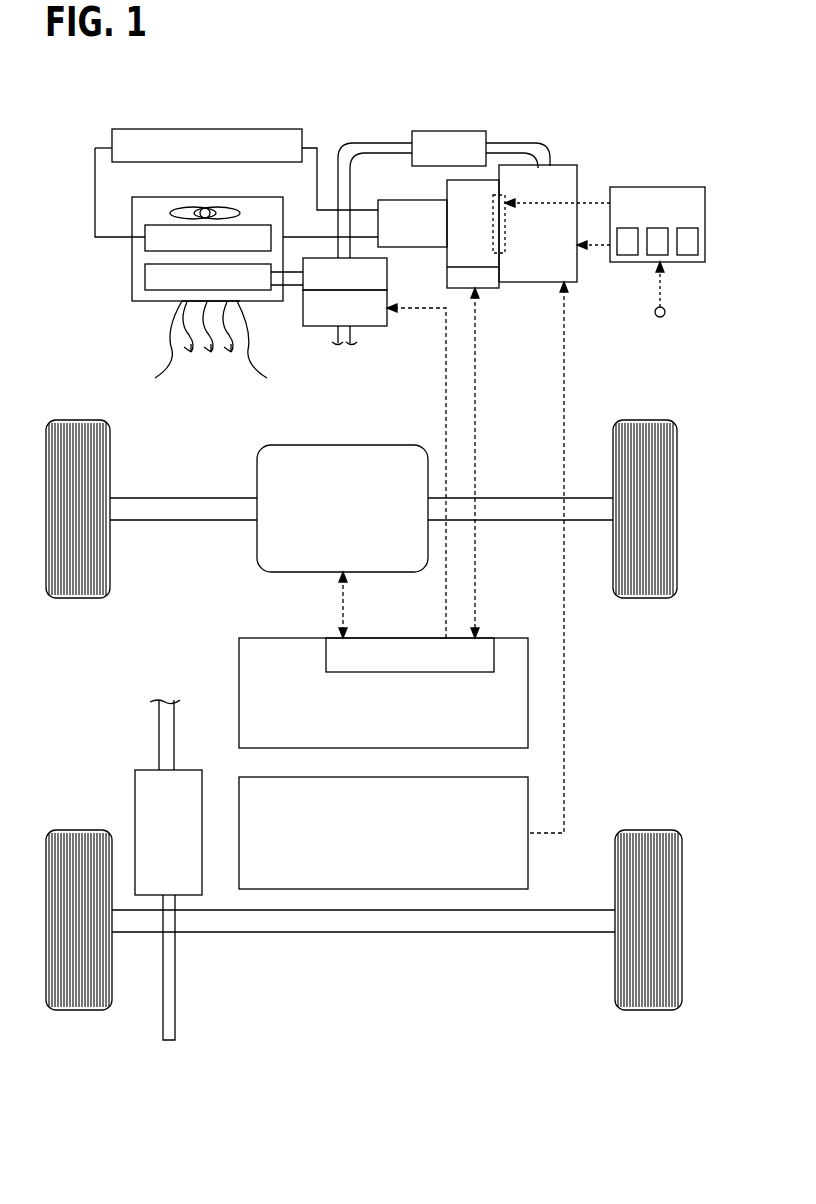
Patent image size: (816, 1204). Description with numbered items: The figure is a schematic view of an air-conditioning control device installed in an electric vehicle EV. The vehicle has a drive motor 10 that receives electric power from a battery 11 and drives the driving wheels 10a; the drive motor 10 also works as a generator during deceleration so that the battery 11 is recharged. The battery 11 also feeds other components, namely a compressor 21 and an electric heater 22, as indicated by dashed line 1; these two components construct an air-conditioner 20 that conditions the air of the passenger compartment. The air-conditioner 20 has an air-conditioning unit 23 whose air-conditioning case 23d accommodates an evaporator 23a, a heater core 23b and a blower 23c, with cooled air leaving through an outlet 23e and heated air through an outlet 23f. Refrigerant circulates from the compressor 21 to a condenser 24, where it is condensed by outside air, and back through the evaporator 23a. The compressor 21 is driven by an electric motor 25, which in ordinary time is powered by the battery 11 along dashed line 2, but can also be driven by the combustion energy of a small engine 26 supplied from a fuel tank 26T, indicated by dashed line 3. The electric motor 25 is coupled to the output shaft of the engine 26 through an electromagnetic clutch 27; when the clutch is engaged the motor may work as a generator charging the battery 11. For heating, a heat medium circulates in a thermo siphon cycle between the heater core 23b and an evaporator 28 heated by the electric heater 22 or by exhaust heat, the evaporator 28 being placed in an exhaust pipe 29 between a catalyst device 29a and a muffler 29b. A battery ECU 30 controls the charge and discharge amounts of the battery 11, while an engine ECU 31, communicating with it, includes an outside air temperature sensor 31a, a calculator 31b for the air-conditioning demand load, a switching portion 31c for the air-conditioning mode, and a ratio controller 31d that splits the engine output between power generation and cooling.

The dashed line 1 is at (446, 390).
The dashed line 2 is at (475, 390).
The dashed line 3 is at (564, 390).
The drive motor 10 is at (405, 445).
The driving wheels 10a is at (88, 420).
The battery 11 is at (253, 638).
The air-conditioner 20 is at (100, 130).
The compressor 21 is at (387, 200).
The electric heater 22 is at (372, 327).
The air-conditioning unit 23 is at (120, 311).
The evaporator 23a is at (145, 242).
The heater core 23b is at (145, 278).
The blower 23c is at (225, 207).
The air-conditioning case 23d is at (137, 302).
The outlet 23e is at (153, 352).
The outlet 23f is at (263, 352).
The condenser 24 is at (285, 129).
The electric motor 25 is at (482, 262).
The engine 26 is at (565, 165).
The fuel tank 26T is at (528, 876).
The electromagnetic clutch 27 is at (505, 253).
The evaporator 28 is at (388, 265).
The exhaust pipe 29 is at (371, 142).
The catalyst device 29a is at (471, 131).
The muffler 29b is at (135, 779).
The battery ECU 30 is at (494, 653).
The engine ECU 31 is at (655, 187).
The outside air temperature sensor 31a is at (660, 318).
The calculator 31b is at (625, 255).
The switching portion 31c is at (655, 255).
The ratio controller 31d is at (687, 255).
The electric vehicle EV is at (550, 1003).